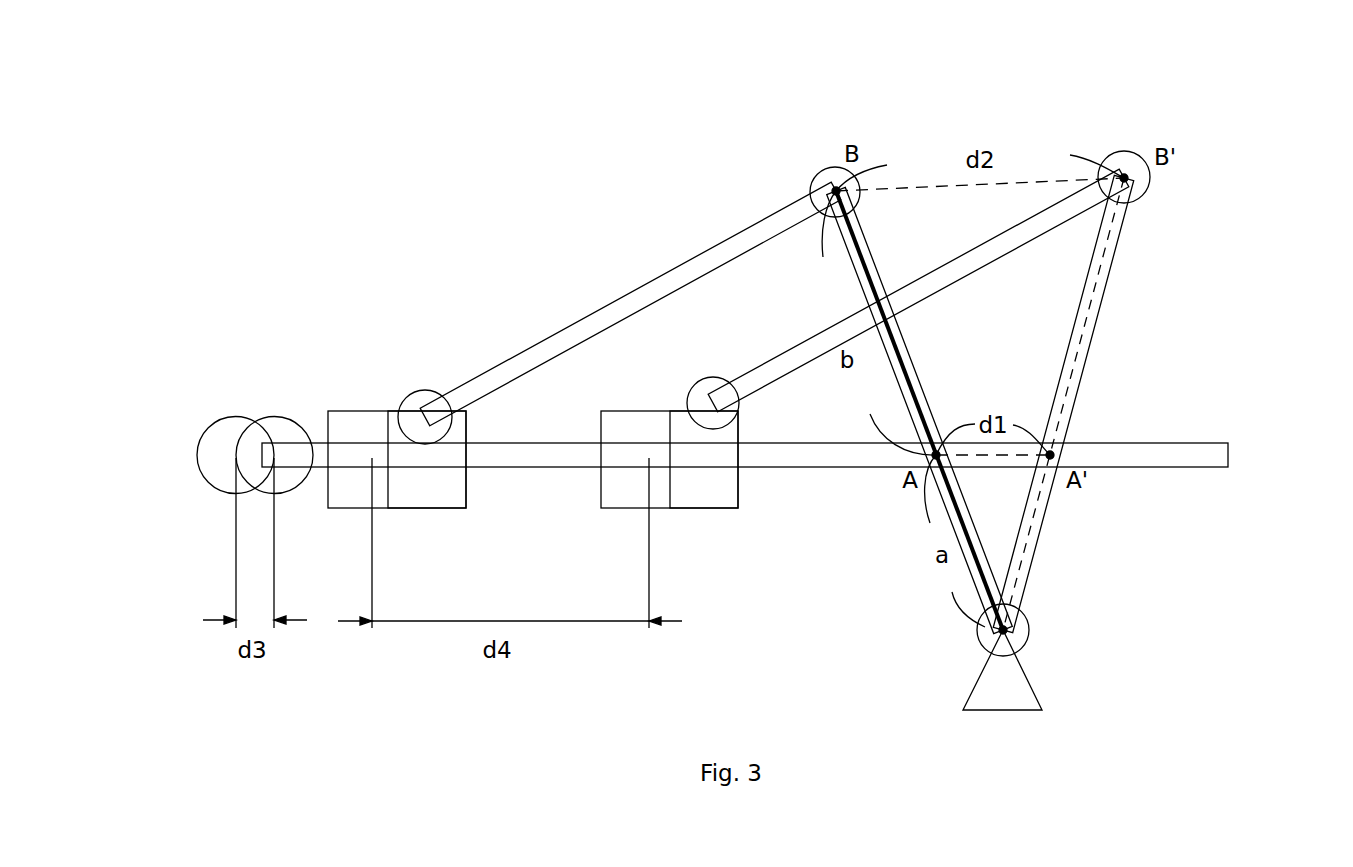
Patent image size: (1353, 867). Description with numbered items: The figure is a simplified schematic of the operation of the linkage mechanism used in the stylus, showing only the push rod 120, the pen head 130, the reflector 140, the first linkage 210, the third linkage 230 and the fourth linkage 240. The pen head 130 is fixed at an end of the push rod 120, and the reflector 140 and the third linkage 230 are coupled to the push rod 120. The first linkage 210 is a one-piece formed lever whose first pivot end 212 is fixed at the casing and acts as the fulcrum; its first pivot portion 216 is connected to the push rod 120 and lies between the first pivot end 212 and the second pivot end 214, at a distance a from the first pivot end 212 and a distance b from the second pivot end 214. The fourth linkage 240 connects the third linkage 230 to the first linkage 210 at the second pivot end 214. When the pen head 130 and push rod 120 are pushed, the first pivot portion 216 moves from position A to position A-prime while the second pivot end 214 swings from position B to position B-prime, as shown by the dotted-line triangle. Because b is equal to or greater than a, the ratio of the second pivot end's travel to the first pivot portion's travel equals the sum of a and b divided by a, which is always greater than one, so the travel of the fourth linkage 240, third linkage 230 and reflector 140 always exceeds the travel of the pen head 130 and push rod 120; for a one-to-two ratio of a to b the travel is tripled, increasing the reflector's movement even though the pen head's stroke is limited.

The push rod 120 is at (767, 453).
The pen head 130 is at (227, 417).
The reflector 140 is at (352, 410).
The first linkage 210 is at (905, 355).
The first pivot end 212 is at (1030, 625).
The second pivot end 214 is at (834, 188).
The first pivot portion 216 is at (930, 456).
The third linkage 230 is at (430, 510).
The fourth linkage 240 is at (597, 322).